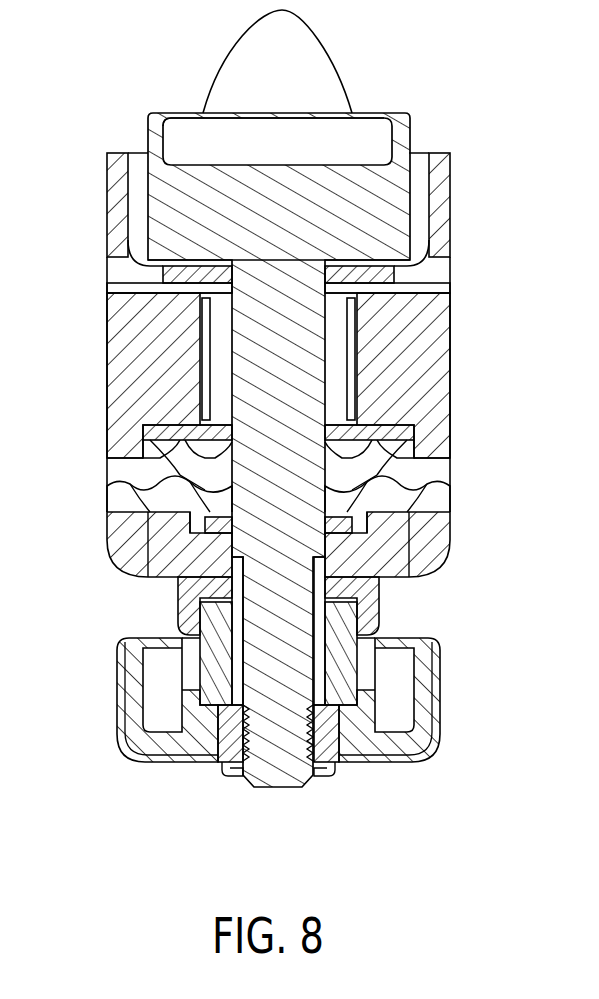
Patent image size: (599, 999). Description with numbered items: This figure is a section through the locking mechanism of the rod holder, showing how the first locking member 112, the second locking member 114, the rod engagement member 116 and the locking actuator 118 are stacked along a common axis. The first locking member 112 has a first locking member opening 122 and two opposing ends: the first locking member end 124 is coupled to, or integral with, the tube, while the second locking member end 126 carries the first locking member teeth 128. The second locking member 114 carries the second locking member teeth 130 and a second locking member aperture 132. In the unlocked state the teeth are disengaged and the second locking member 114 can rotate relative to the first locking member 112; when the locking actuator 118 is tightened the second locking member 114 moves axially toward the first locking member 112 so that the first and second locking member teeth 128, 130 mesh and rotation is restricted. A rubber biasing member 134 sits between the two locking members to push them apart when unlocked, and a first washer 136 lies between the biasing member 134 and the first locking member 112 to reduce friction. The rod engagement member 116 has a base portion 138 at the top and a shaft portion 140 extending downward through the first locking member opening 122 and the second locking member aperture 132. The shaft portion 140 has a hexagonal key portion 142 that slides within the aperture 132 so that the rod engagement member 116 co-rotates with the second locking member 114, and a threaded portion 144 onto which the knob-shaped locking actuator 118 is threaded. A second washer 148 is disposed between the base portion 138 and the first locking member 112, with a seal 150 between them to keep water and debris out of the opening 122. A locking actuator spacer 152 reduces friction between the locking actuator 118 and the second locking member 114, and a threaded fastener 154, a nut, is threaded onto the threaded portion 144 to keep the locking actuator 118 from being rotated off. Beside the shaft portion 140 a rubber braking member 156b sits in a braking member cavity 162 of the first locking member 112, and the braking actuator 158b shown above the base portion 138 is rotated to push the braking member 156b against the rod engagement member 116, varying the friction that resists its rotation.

The first locking member 112 is at (452, 198).
The second locking member 114 is at (108, 535).
The rod engagement member 116 is at (365, 133).
The locking actuator 118 is at (420, 725).
The first locking member opening 122 is at (213, 295).
The first locking member end 124 is at (455, 153).
The second locking member end 126 is at (450, 458).
The first locking member teeth 128 is at (423, 450).
The second locking member teeth 130 is at (123, 498).
The second locking member aperture 132 is at (330, 545).
The biasing member 134 is at (330, 472).
The first washer 136 is at (173, 432).
The base portion 138 is at (205, 135).
The shaft portion 140 is at (330, 313).
The key portion 142 is at (207, 537).
The threaded portion 144 is at (230, 597).
The second washer 148 is at (353, 267).
The seal 150 is at (335, 280).
The locking actuator spacer 152 is at (367, 623).
The threaded fastener 154 is at (325, 765).
The braking member 156b is at (215, 383).
The braking actuator 158b is at (273, 40).
The braking member cavity 162 is at (355, 375).